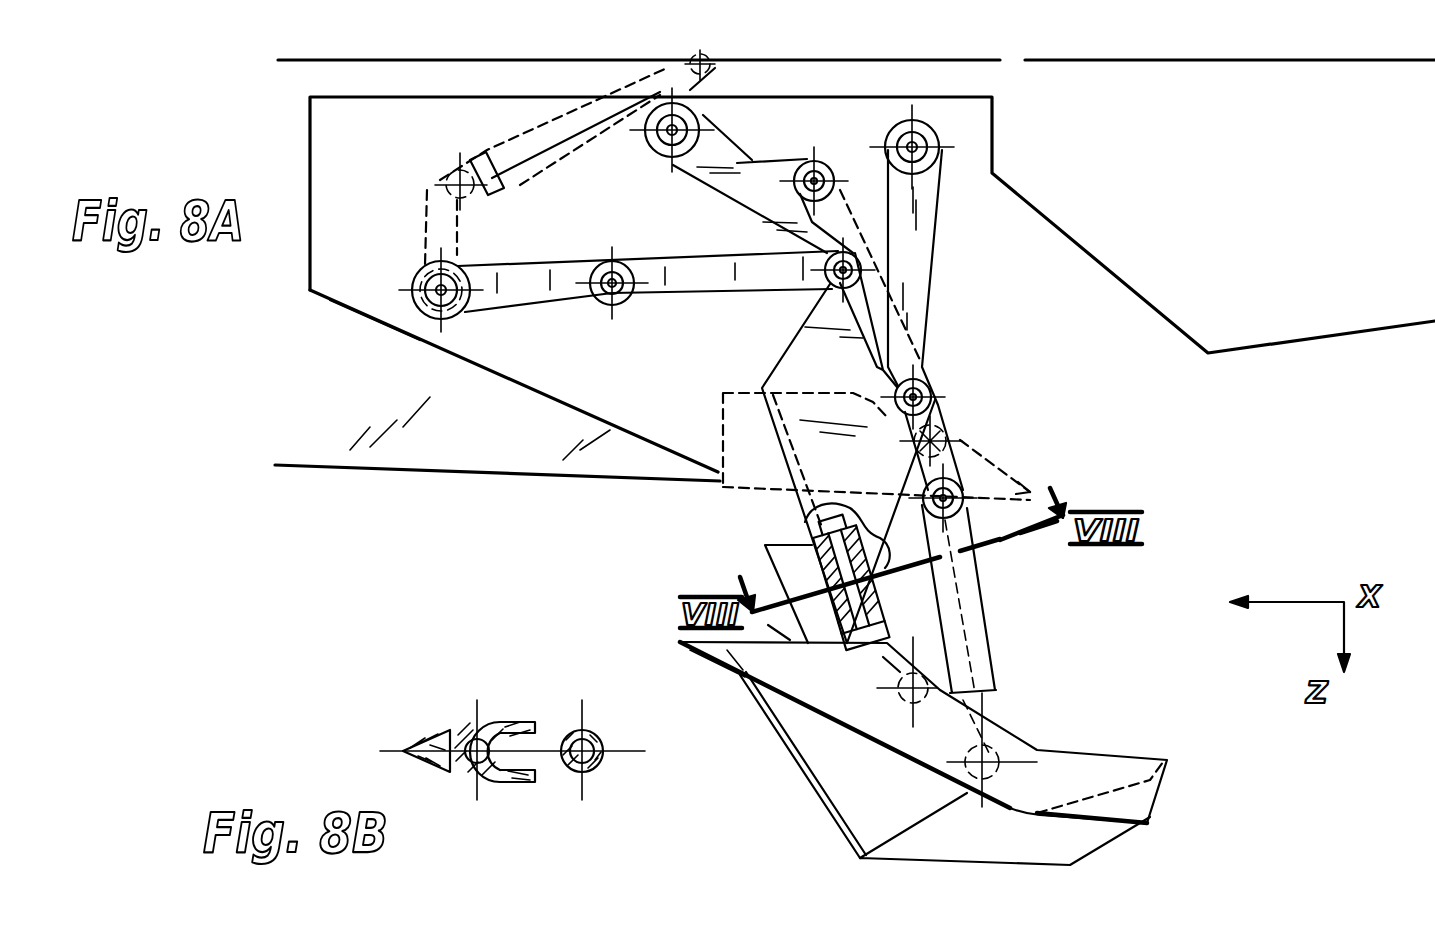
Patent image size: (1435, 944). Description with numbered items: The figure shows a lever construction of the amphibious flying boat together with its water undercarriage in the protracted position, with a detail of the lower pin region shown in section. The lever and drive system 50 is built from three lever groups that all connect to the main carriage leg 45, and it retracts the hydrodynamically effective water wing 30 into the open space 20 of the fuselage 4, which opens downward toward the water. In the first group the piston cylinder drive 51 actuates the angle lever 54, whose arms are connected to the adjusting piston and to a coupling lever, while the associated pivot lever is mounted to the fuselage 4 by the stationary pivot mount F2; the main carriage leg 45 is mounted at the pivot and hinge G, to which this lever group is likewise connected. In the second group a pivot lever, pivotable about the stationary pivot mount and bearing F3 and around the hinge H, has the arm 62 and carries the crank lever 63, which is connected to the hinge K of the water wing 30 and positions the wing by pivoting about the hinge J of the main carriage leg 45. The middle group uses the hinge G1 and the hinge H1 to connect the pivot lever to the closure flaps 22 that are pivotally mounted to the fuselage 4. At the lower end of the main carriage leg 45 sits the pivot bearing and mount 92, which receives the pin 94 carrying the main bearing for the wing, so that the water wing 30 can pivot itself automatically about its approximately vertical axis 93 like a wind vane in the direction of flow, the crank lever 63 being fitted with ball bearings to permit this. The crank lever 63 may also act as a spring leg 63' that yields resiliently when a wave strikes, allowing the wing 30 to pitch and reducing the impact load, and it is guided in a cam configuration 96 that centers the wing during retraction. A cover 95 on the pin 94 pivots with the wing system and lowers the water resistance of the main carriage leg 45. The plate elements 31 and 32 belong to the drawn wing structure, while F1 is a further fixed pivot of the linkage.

In FIG. 8A, the fuselage of the flying boat 4 is at (403, 460).
In FIG. 8A, the open space 20 is at (597, 393).
In FIG. 8A, the closure flaps 22 is at (1015, 482).
In FIG. 8A, the hydrodynamically effective water wing 30 is at (1018, 723).
In FIG. 8A, the side plate 31 is at (863, 718).
In FIG. 8A, the bottom plate 32 is at (833, 777).
In FIG. 8A, the main carriage leg 45 is at (787, 370).
In FIG. 8A, the lever and drive system 50 is at (1043, 455).
In FIG. 8A, the piston cylinder drive 51 is at (558, 172).
In FIG. 8A, the angle lever 54 is at (460, 362).
In FIG. 8A, the arm of pivot lever 62 is at (918, 285).
In FIG. 8A, the crank lever 63 is at (995, 630).
In FIG. 8A, the spring leg 63' is at (959, 531).
In FIG. 8A, the pivot bearing and mount 92 is at (810, 575).
In FIG. 8A, the pivot axis 93 is at (805, 525).
In FIG. 8B, the pivot axis 93 is at (485, 770).
In FIG. 8A, the pin 94 is at (883, 657).
In FIG. 8A, the cover 95 is at (768, 626).
In FIG. 8B, the cover 95 is at (445, 770).
In FIG. 8A, the cam configuration 96 is at (893, 518).
In FIG. 8A, the pivot F1 is at (468, 308).
In FIG. 8A, the stationary pivot mount F2 is at (700, 113).
In FIG. 8A, the stationary pivot mount and bearing F3 is at (940, 137).
In FIG. 8A, the pivot and hinge G is at (832, 290).
In FIG. 8A, the hinge G1 is at (838, 172).
In FIG. 8A, the hinge H is at (930, 392).
In FIG. 8A, the hinge H1 is at (945, 440).
In FIG. 8A, the hinge J is at (907, 703).
In FIG. 8A, the hinge K is at (978, 780).